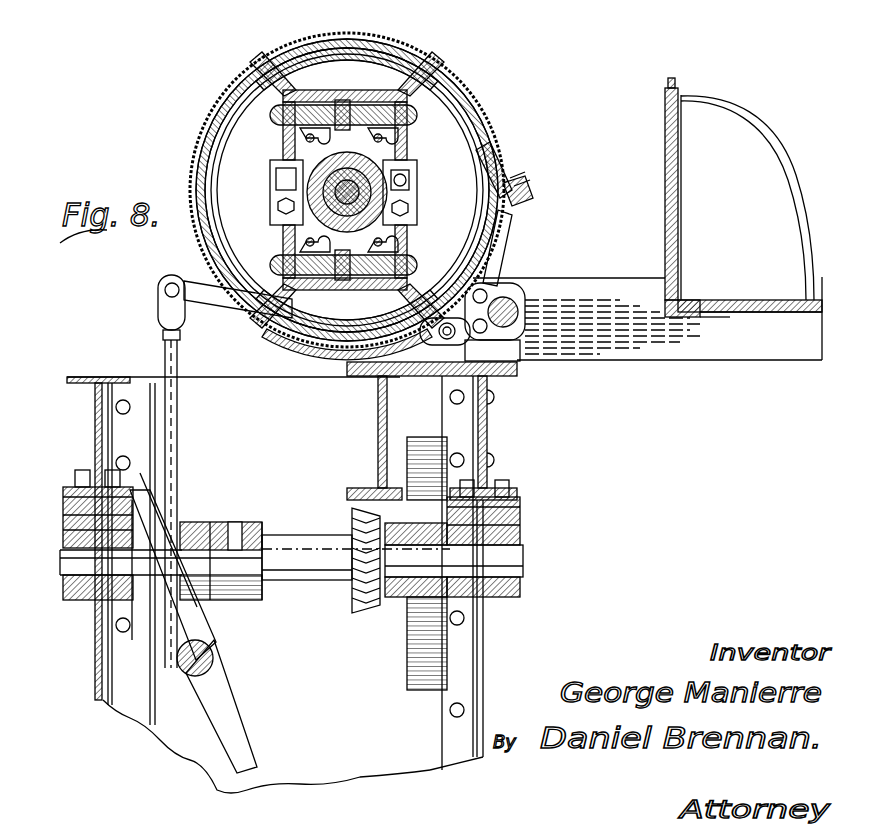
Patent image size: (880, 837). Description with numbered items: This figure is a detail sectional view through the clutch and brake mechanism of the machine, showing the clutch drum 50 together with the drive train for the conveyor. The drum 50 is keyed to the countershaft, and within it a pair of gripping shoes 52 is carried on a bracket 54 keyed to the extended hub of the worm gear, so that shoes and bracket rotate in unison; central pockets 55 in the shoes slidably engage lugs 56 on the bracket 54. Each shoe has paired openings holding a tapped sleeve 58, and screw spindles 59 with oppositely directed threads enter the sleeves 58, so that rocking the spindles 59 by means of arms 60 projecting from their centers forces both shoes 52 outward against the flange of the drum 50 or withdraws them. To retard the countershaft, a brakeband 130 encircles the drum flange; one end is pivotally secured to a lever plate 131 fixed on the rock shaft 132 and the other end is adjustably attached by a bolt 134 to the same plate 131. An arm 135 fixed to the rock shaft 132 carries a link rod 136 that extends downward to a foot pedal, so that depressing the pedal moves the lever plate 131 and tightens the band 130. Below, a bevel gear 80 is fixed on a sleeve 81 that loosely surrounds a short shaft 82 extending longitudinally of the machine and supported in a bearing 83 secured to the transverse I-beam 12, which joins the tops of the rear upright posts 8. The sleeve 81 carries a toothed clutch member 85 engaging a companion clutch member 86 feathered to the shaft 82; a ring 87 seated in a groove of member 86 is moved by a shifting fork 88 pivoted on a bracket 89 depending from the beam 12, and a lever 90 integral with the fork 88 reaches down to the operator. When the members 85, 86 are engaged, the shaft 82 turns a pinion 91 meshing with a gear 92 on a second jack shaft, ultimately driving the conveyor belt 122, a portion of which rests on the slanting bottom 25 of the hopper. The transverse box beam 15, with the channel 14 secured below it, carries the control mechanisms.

The upright posts 8 is at (110, 616).
The transverse I-beam 12 is at (95, 426).
The channel 14 is at (604, 260).
The box beam 15 is at (665, 208).
The slanting bottom 25 is at (728, 314).
The clutch drum 50 is at (232, 91).
The gripping shoes 52 is at (448, 92).
The bracket 54 is at (306, 222).
The central pockets 55 is at (270, 176).
The lugs 56 is at (278, 204).
The tapped sleeve 58 is at (414, 102).
The screw spindles 59 is at (343, 104).
The arms 60 is at (352, 98).
The bevel gear 80 is at (354, 598).
The sleeve 81 is at (300, 581).
The short shaft 82 is at (512, 558).
The bearing 83 is at (82, 593).
The clutch member 85 is at (243, 522).
The companion clutch member 86 is at (216, 521).
The ring 87 is at (190, 521).
The shifting fork 88 is at (186, 523).
The bracket 89 is at (155, 605).
The lever 90 is at (237, 737).
The pinion 91 is at (414, 598).
The gear 92 is at (407, 437).
The conveyor belt 122 is at (725, 300).
The brakeband 130 is at (222, 147).
The lever plate 131 is at (503, 288).
The rock shaft 132 is at (520, 306).
The bolt 134 is at (505, 248).
The arm 135 is at (192, 262).
The link rod 136 is at (165, 352).